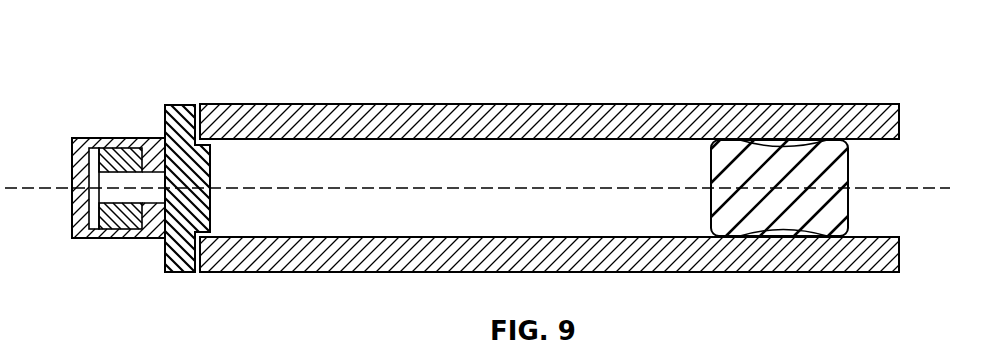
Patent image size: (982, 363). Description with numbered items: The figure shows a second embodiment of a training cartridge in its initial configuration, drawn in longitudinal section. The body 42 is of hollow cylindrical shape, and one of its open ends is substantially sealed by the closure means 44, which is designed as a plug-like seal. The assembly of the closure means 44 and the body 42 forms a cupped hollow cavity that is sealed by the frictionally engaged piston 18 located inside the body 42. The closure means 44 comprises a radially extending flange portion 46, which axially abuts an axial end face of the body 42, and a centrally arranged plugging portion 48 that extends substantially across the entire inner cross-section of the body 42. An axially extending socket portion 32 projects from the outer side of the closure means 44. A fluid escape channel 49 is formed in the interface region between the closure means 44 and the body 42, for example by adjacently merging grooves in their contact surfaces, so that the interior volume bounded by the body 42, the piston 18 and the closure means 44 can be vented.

The piston 18 is at (808, 148).
The axially extending socket portion 32 is at (132, 149).
The body 42 is at (405, 104).
The closure means 44 is at (166, 104).
The radially extending flange portion 46 is at (181, 105).
The centrally arranged plugging portion 48 is at (210, 186).
The fluid escape channel 49 is at (201, 105).